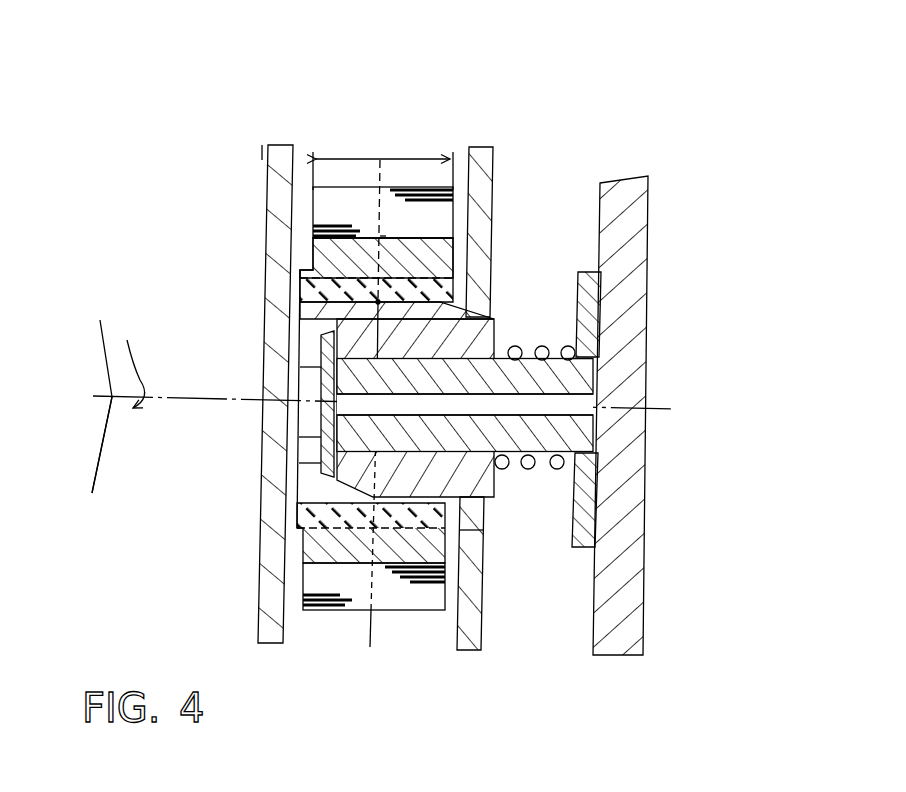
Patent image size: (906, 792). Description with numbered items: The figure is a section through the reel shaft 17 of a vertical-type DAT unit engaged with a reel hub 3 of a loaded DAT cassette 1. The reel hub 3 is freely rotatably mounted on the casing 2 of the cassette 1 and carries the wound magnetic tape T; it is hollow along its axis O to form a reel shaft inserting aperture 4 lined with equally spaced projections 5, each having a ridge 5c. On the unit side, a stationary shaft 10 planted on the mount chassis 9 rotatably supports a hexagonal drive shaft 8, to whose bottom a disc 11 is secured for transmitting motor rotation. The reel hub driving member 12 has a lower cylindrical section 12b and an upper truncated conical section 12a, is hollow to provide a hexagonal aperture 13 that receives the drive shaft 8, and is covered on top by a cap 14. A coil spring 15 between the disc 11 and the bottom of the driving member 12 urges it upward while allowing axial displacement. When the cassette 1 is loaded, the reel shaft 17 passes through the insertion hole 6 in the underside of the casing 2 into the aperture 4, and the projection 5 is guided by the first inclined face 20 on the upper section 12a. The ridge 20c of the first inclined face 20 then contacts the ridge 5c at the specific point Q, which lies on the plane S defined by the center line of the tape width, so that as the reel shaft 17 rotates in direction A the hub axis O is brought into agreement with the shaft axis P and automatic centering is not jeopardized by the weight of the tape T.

The DAT cassette 1 is at (258, 145).
The casing 2 is at (279, 197).
The reel hub 3 is at (312, 566).
The reel shaft inserting aperture 4 is at (307, 481).
The projection 5 is at (294, 285).
The ridge of the projection 5c is at (330, 303).
The insertion hole 6 is at (487, 292).
The drive shaft 8 is at (594, 458).
The mount chassis 9 is at (630, 213).
The stationary shaft 10 is at (580, 412).
The disc 11 is at (600, 290).
The reel hub driving member 12 is at (332, 494).
The upper truncated conical section 12a is at (357, 543).
The lower cylindrical section 12b is at (485, 531).
The aperture 13 is at (500, 352).
The cap 14 is at (335, 412).
The coil spring 15 is at (576, 352).
The reel shaft 17 is at (312, 384).
The first inclined face 20 is at (338, 310).
The ridge of the first inclined face 20c is at (372, 320).